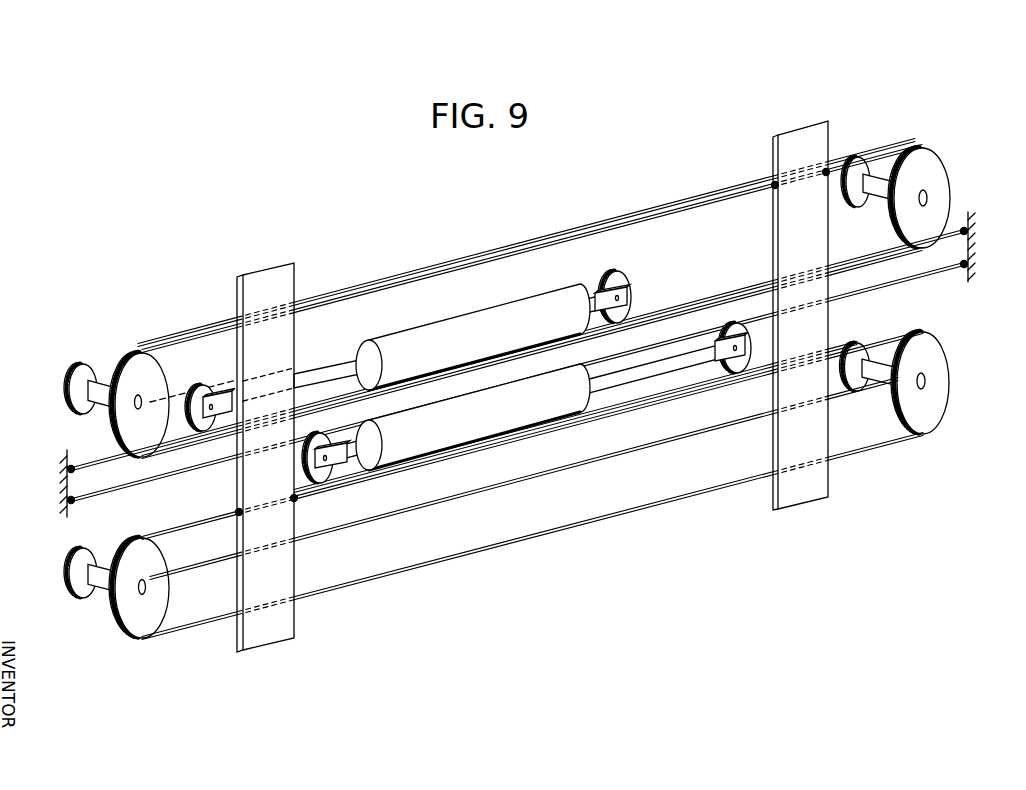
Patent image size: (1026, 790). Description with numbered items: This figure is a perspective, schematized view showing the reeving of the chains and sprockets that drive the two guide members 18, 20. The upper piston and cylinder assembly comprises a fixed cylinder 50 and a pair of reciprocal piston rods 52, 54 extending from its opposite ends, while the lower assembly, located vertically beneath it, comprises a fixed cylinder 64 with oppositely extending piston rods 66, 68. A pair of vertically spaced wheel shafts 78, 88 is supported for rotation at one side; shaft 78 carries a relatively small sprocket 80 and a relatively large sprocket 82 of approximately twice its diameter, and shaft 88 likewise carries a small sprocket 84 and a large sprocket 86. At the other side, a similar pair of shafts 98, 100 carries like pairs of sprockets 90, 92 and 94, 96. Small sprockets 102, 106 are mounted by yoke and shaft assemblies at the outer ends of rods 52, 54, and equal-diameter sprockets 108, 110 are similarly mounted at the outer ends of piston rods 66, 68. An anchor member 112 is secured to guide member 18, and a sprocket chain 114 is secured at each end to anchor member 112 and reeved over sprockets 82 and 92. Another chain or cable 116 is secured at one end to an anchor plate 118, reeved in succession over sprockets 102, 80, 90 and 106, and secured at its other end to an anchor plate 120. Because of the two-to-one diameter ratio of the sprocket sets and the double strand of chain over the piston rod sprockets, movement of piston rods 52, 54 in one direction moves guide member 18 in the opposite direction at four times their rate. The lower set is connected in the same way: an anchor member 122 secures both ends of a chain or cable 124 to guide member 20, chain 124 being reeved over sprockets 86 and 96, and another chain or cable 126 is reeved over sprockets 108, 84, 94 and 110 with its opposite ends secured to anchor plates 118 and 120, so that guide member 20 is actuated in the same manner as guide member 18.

The guide member 18 is at (793, 129).
The guide member 20 is at (276, 264).
The fixed cylinder 50 is at (490, 343).
The piston rod 52 is at (590, 294).
The piston rod 54 is at (330, 372).
The fixed cylinder 64 is at (490, 425).
The piston rod 66 is at (617, 378).
The piston rod 68 is at (354, 444).
The wheel shaft 78 is at (929, 198).
The small sprocket 80 is at (869, 200).
The large sprocket 82 is at (925, 160).
The small sprocket 84 is at (864, 388).
The large sprocket 86 is at (928, 420).
The wheel shaft 88 is at (926, 381).
The small sprocket 90 is at (78, 372).
The large sprocket 92 is at (139, 360).
The small sprocket 94 is at (78, 560).
The large sprocket 96 is at (140, 628).
The wheel shaft 98 is at (134, 404).
The wheel shaft 100 is at (148, 588).
The sprocket 102 is at (621, 275).
The sprocket 106 is at (213, 386).
The sprocket 108 is at (739, 375).
The sprocket 110 is at (328, 478).
The anchor member 112 is at (823, 177).
The sprocket chain 114 is at (450, 275).
The sprocket chain 116 is at (400, 274).
The anchor plate 118 is at (975, 238).
The anchor plate 120 is at (66, 482).
The anchor member 122 is at (291, 500).
The sprocket chain 124 is at (626, 412).
The sprocket chain 126 is at (850, 337).